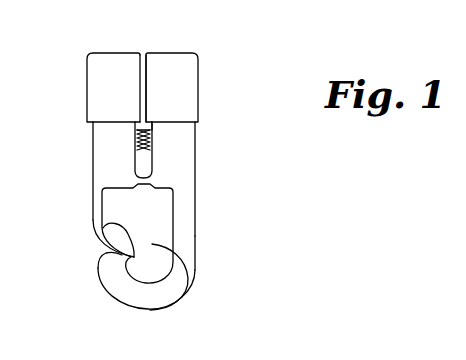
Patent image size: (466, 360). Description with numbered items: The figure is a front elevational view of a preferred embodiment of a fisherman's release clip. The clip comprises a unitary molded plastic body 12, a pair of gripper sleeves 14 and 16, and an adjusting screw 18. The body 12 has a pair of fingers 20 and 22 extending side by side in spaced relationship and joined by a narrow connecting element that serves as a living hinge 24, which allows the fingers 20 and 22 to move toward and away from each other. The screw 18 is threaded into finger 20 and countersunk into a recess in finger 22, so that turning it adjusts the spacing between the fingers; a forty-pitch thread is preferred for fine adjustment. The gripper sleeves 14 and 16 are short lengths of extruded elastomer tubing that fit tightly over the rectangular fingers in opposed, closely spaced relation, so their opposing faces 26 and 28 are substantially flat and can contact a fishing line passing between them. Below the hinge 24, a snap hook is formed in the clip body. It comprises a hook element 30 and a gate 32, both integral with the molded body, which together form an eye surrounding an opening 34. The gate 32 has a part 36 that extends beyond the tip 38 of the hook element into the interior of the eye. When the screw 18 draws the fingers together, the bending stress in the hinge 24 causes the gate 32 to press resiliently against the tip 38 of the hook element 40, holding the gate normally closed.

The body 12 is at (195, 202).
The gripper sleeve 14 is at (185, 80).
The gripper sleeve 16 is at (97, 88).
The adjusting screw 18 is at (143, 152).
The finger 20 is at (112, 137).
The finger 22 is at (182, 142).
The living hinge 24 is at (140, 172).
The opposing face 26 is at (138, 80).
The opposing face 28 is at (146, 75).
The hook element 30 is at (196, 238).
The gate 32 is at (97, 237).
The opening 34 is at (193, 273).
The part of the gate 36 is at (103, 225).
The tip of the hook element 38 is at (112, 263).
The hook element 40 is at (150, 296).